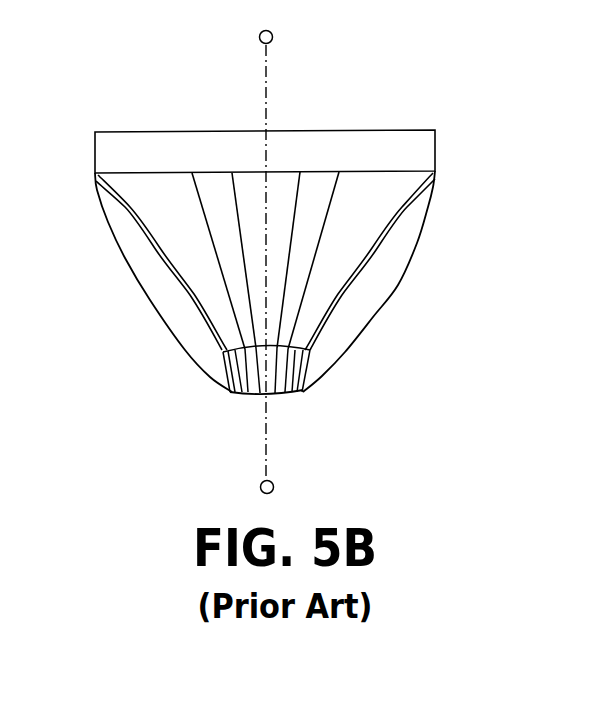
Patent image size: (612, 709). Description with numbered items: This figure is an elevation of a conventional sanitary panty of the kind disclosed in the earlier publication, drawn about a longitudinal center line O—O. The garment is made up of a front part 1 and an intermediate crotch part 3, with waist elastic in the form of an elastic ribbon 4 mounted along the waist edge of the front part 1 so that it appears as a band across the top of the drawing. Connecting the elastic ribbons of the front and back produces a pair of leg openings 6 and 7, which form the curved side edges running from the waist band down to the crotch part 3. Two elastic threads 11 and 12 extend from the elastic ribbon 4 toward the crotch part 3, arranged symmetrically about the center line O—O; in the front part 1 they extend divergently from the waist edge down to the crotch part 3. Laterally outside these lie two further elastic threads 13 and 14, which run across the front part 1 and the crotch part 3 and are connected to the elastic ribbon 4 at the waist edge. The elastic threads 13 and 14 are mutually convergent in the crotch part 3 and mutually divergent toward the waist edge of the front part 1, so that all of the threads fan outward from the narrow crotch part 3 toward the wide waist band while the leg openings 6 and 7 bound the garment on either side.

The front part 1 is at (383, 189).
The crotch part 3 is at (290, 392).
The elastic ribbon 4 is at (400, 135).
The leg opening 6 is at (352, 278).
The leg opening 7 is at (190, 297).
The elastic thread 11 is at (296, 201).
The elastic thread 12 is at (236, 204).
The elastic thread 13 is at (317, 242).
The elastic thread 14 is at (207, 215).